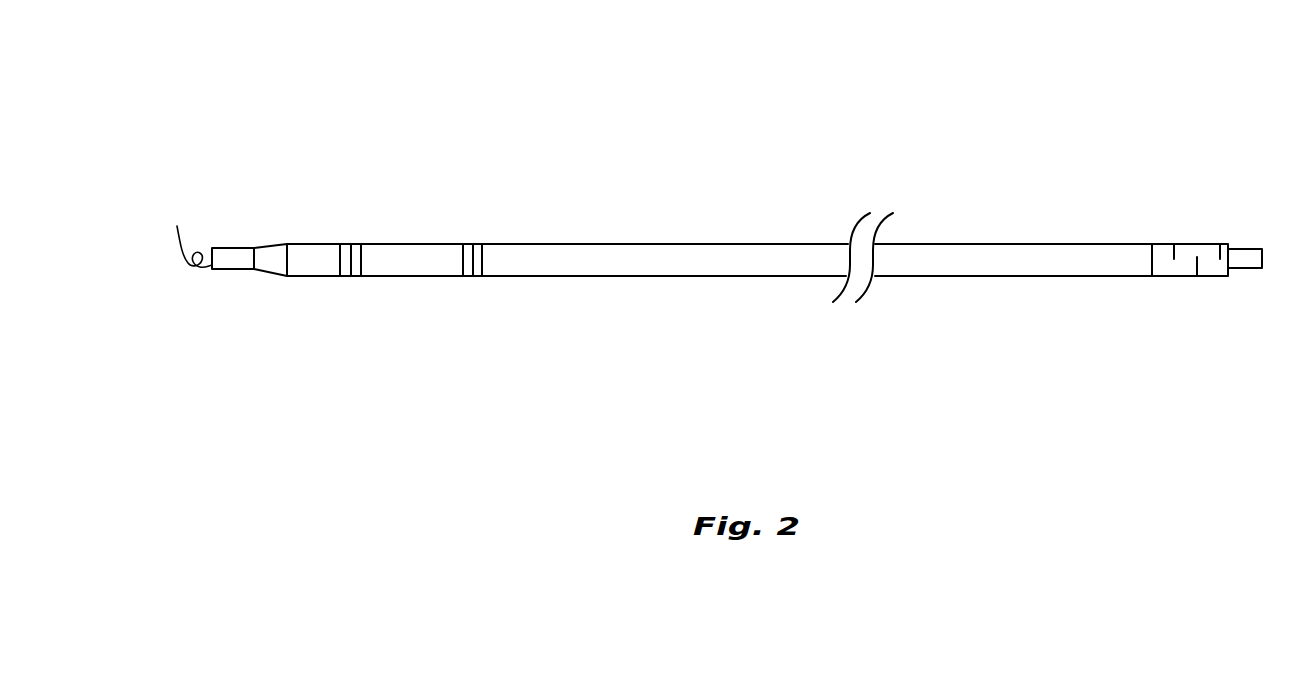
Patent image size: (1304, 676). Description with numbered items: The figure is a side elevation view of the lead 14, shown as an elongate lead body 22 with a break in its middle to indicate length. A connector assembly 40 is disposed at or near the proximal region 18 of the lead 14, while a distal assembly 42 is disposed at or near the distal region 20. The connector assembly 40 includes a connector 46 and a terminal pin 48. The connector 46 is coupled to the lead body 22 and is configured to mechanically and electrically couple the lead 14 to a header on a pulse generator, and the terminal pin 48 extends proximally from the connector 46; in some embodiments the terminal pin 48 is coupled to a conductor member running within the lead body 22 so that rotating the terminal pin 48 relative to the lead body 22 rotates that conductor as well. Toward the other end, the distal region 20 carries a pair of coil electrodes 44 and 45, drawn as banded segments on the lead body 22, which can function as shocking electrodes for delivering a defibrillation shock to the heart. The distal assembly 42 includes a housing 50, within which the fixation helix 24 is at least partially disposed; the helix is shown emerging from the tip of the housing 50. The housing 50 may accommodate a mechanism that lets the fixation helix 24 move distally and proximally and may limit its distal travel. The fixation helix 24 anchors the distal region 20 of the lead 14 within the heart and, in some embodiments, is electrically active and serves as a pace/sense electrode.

The lead 14 is at (728, 117).
The proximal region 18 is at (1077, 160).
The distal region 20 is at (355, 305).
The lead body 22 is at (760, 265).
The fixation helix 24 is at (188, 231).
The connector assembly 40 is at (1200, 288).
The distal assembly 42 is at (247, 225).
The coil electrode 44 is at (414, 252).
The coil electrode 45 is at (540, 252).
The connector 46 is at (1183, 243).
The terminal pin 48 is at (1245, 250).
The housing 50 is at (232, 266).